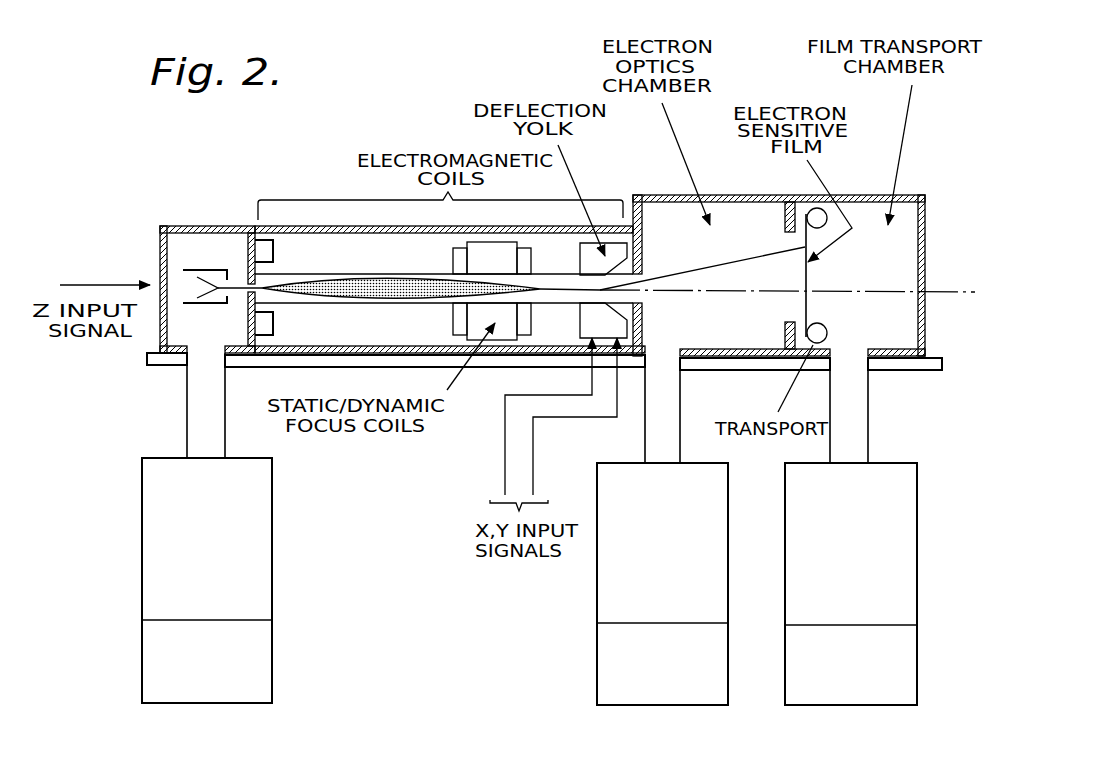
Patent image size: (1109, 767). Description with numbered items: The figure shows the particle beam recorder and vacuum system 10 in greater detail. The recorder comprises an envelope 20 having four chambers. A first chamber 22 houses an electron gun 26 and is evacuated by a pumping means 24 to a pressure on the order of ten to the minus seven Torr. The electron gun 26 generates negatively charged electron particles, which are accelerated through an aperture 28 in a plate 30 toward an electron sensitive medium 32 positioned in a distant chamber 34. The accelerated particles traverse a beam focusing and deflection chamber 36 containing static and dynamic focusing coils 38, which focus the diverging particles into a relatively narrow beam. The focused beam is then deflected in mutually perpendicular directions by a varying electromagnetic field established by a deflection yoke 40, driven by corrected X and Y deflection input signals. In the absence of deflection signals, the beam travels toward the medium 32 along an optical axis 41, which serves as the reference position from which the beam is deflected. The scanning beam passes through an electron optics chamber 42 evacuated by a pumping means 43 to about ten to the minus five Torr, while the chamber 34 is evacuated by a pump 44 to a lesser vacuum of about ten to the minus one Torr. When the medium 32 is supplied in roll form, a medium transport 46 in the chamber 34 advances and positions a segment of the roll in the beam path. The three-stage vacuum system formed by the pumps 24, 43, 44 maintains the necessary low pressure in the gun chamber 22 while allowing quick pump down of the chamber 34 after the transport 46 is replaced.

The particle beam recorder and vacuum system 10 is at (299, 170).
The envelope 20 is at (313, 226).
The first chamber 22 is at (182, 240).
The pumping means 24 is at (272, 522).
The electron gun 26 is at (155, 367).
The aperture 28 is at (248, 292).
The plate 30 is at (249, 248).
The electron sensitive medium 32 is at (807, 278).
The chamber 34 is at (907, 242).
The beam focusing and deflection chamber 36 is at (393, 248).
The static and dynamic focusing coils 38 is at (477, 315).
The deflection yoke 40 is at (617, 252).
The optical axis 41 is at (975, 292).
The electron optics chamber 42 is at (745, 208).
The pumping means 43 is at (597, 588).
The pump 44 is at (918, 598).
The medium transport 46 is at (828, 336).